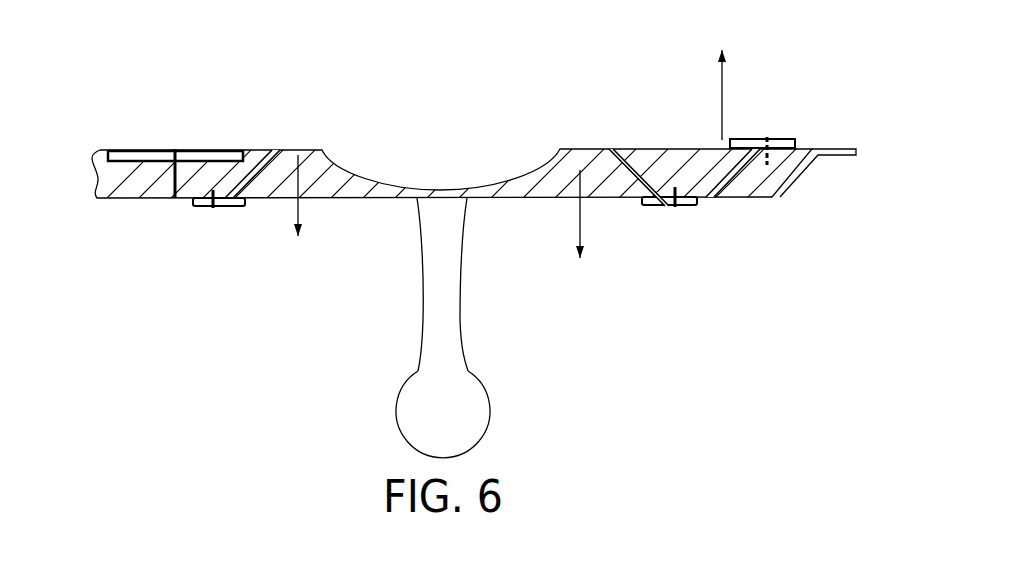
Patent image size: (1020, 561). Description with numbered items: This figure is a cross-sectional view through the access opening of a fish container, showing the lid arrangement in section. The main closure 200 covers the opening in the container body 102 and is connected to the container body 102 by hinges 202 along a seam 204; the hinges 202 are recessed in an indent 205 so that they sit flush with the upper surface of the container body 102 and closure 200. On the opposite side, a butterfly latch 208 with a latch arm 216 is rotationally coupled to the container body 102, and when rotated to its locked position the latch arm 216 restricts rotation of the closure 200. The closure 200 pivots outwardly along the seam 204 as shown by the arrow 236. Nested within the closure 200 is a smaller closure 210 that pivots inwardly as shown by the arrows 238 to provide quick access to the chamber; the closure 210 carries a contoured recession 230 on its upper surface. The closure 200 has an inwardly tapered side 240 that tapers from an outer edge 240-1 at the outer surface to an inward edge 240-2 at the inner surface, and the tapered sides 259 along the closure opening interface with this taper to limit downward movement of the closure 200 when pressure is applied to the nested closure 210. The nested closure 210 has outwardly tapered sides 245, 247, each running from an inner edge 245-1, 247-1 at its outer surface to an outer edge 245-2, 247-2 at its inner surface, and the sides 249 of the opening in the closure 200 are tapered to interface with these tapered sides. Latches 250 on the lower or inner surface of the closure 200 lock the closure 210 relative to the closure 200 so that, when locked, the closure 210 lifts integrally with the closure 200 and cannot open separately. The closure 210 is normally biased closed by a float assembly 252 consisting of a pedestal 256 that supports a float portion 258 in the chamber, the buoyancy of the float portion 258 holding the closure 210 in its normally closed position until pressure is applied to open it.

The container body 102 is at (92, 157).
The closure 200 is at (271, 145).
The hinges 202 is at (175, 150).
The seam 204 is at (168, 177).
The indent 205 is at (246, 150).
The butterfly latches 208 is at (783, 130).
The nested closure 210 is at (577, 141).
The latch arm 216 is at (752, 166).
The contoured recession 230 is at (442, 176).
The arrow 236 is at (722, 78).
The arrow 238 is at (299, 207).
The inwardly tapered side 240 is at (782, 183).
The outer edge 240-1 is at (752, 149).
The inward edge 240-2 is at (710, 194).
The outwardly tapered side 245 is at (636, 165).
The inner edge 245-1 is at (610, 148).
The outer edge 245-2 is at (665, 207).
The outwardly tapered side 247 is at (338, 172).
The inner edge 247-1 is at (272, 149).
The outer edge 247-2 is at (226, 199).
The sides of the opening 249 is at (648, 178).
The latches 250 is at (203, 212).
The float assembly 252 is at (476, 373).
The pedestal 256 is at (447, 290).
The float portion 258 is at (425, 425).
The tapered sides 259 is at (813, 156).